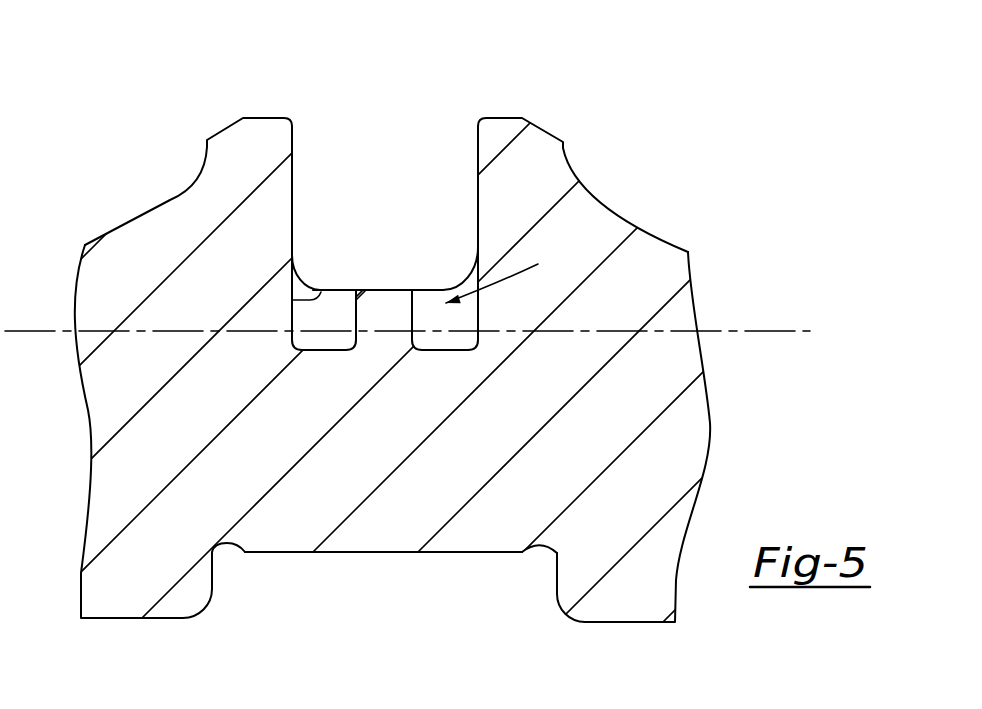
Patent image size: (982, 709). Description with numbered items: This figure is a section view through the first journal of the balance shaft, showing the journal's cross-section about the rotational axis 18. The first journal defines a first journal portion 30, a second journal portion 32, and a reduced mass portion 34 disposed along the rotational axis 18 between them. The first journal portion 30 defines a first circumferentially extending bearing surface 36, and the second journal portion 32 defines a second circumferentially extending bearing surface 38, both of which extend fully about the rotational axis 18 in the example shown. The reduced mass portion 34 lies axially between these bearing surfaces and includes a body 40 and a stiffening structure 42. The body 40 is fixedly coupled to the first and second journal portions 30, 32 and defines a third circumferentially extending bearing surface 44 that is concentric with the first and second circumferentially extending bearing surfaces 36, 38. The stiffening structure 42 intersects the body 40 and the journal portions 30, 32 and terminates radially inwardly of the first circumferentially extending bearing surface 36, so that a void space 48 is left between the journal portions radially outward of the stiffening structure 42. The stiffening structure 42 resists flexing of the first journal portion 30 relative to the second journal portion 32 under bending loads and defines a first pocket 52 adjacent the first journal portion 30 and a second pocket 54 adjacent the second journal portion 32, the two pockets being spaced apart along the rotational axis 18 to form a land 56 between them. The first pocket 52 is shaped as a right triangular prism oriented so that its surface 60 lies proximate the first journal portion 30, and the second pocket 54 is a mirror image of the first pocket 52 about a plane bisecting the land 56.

The rotational axis 18 is at (750, 330).
The first journal portion 30 is at (188, 159).
The second journal portion 32 is at (574, 159).
The reduced mass portion 34 is at (373, 424).
The first circumferentially extending bearing surface 36 is at (264, 118).
The second circumferentially extending bearing surface 38 is at (503, 118).
The body 40 is at (393, 526).
The stiffening structure 42 is at (500, 269).
The third circumferentially extending bearing surface 44 is at (373, 553).
The void space 48 is at (428, 173).
The first pocket 52 is at (337, 315).
The second pocket 54 is at (465, 317).
The land 56 is at (380, 290).
The surface 60 is at (320, 292).